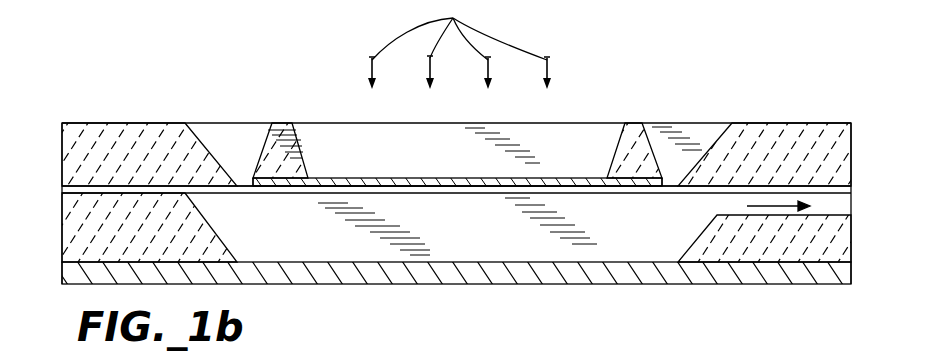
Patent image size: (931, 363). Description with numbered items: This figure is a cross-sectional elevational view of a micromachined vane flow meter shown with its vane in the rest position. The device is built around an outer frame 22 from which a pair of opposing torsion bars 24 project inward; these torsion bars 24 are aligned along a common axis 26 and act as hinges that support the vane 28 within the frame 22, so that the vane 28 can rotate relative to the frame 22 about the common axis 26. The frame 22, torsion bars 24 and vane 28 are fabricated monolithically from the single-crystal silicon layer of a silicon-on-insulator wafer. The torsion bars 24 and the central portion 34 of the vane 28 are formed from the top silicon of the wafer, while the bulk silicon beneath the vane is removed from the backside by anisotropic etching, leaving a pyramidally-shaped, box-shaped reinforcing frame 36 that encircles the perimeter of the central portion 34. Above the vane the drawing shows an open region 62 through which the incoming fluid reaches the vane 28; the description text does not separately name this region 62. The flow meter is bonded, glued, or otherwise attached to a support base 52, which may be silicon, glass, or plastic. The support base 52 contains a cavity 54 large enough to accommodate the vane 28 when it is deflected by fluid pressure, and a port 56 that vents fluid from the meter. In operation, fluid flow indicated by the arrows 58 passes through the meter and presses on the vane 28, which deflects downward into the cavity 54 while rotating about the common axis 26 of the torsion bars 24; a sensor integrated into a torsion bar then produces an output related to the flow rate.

The outer frame 22 is at (772, 123).
The torsion bars 24 is at (247, 193).
The common axis 26 is at (56, 190).
The vane 28 is at (397, 178).
The central portion 34 is at (390, 193).
The reinforcing frame 36 is at (285, 123).
The support base 52 is at (522, 285).
The cavity 54 is at (500, 249).
The port 56 is at (838, 205).
The arrows 58 is at (459, 48).
The upper cavity / opening 62 is at (563, 123).